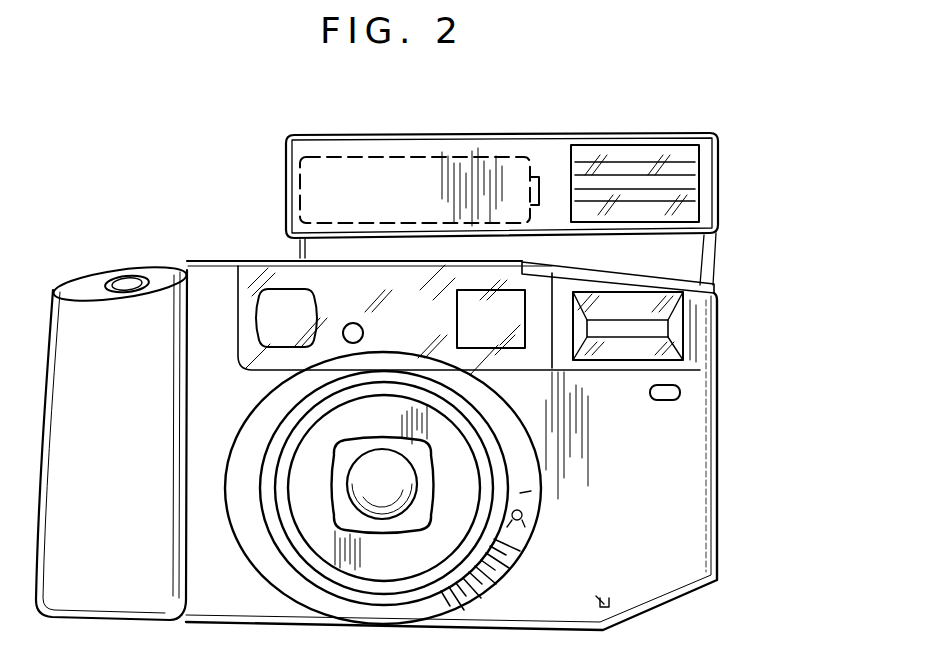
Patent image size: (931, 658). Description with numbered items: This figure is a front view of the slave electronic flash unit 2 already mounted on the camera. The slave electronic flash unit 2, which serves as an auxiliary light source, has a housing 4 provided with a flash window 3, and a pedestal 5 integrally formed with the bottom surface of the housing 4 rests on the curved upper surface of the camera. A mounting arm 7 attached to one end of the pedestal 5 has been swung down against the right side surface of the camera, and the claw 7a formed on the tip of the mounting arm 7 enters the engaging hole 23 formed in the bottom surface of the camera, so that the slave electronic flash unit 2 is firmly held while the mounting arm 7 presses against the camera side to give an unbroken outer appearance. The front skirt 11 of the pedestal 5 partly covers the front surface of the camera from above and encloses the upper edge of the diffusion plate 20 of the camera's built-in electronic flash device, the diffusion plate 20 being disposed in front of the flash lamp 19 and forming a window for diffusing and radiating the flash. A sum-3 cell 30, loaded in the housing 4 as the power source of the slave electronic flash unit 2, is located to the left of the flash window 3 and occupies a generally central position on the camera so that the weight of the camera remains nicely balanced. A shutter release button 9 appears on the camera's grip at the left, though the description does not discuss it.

The slave electronic flash unit 2 is at (559, 134).
The flash window 3 is at (647, 157).
The housing 4 is at (720, 182).
The pedestal 5 is at (333, 250).
The mounting arm 7 is at (712, 477).
The claw 7a is at (610, 602).
The shutter release button 9 is at (127, 279).
The front skirt 11 is at (665, 276).
The flash lamp 19 is at (612, 330).
The diffusion plate 20 is at (697, 331).
The engaging hole 23 is at (602, 603).
The sum-3 cell 30 is at (397, 170).